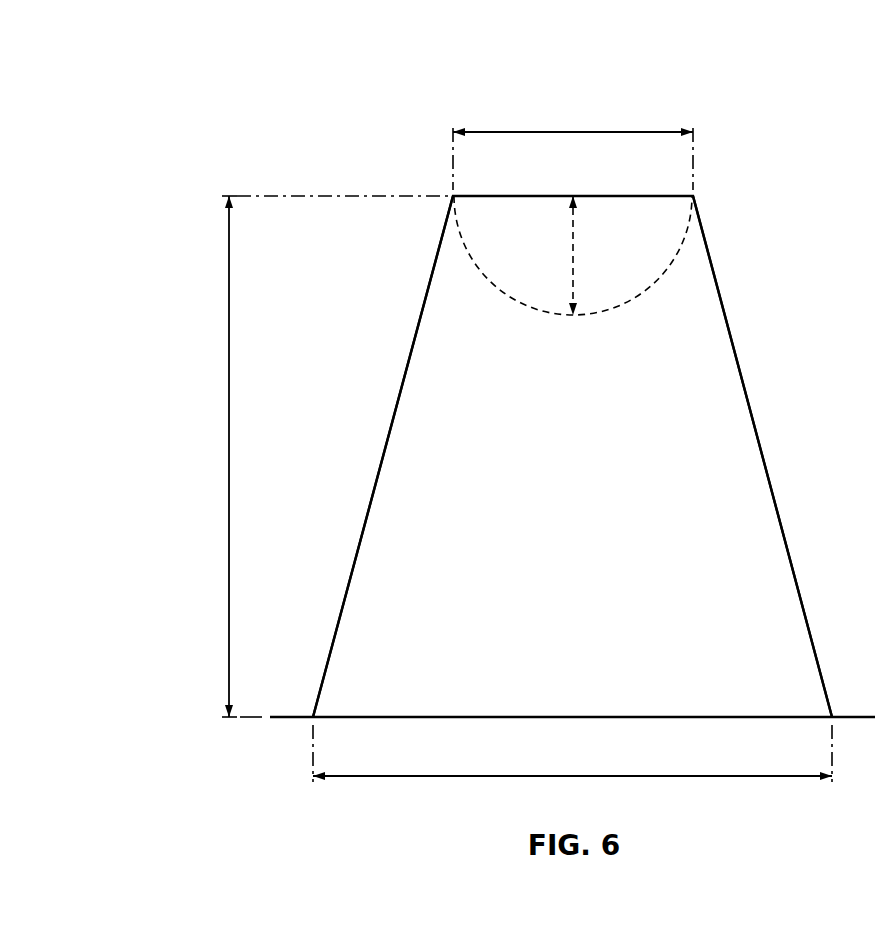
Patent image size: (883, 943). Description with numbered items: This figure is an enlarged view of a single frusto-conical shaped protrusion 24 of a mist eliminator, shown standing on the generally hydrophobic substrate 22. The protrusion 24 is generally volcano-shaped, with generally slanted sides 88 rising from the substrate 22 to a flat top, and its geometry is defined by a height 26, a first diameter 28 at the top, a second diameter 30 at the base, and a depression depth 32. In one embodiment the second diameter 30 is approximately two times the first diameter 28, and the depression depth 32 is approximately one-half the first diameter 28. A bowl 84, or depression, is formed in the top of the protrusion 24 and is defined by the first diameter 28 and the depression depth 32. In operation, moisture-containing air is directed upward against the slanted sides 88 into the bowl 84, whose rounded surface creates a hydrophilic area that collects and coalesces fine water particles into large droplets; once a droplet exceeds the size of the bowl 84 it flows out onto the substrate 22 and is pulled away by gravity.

The frusto-conical shaped protrusion 24 is at (378, 96).
The substrate 22 is at (290, 710).
The height 26 is at (229, 455).
The first diameter 28 is at (574, 131).
The second diameter 30 is at (573, 776).
The depression depth 32 is at (576, 255).
The bowl 84 is at (492, 250).
The slanted sides 88 is at (381, 456).